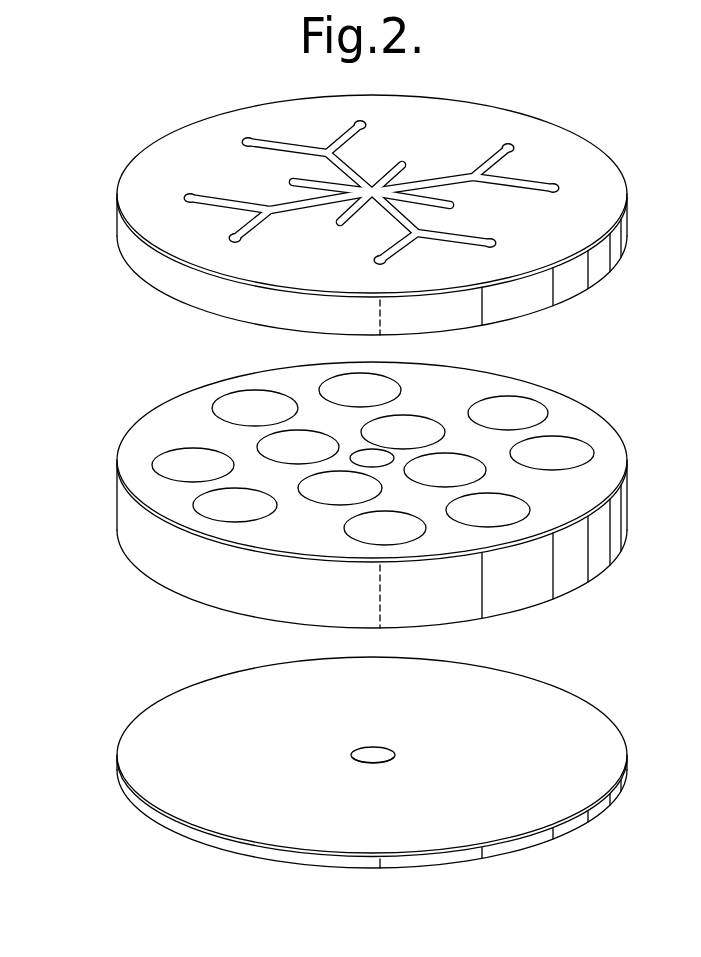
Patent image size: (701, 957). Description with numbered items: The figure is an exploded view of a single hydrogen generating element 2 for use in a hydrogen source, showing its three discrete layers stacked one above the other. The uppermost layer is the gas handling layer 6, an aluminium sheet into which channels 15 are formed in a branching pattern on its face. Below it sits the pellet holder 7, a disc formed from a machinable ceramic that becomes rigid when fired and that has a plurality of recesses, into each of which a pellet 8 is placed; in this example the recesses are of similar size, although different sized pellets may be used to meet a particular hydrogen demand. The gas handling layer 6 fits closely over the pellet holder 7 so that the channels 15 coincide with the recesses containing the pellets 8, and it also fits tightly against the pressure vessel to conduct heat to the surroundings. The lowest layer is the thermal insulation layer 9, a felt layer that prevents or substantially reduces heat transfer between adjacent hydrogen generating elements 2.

The hydrogen generating element 2 is at (103, 88).
The gas handling layer 6 is at (575, 157).
The channels 15 is at (252, 140).
The pellet holder 7 is at (172, 572).
The pellet 8 is at (525, 412).
The thermal insulation layer 9 is at (543, 707).